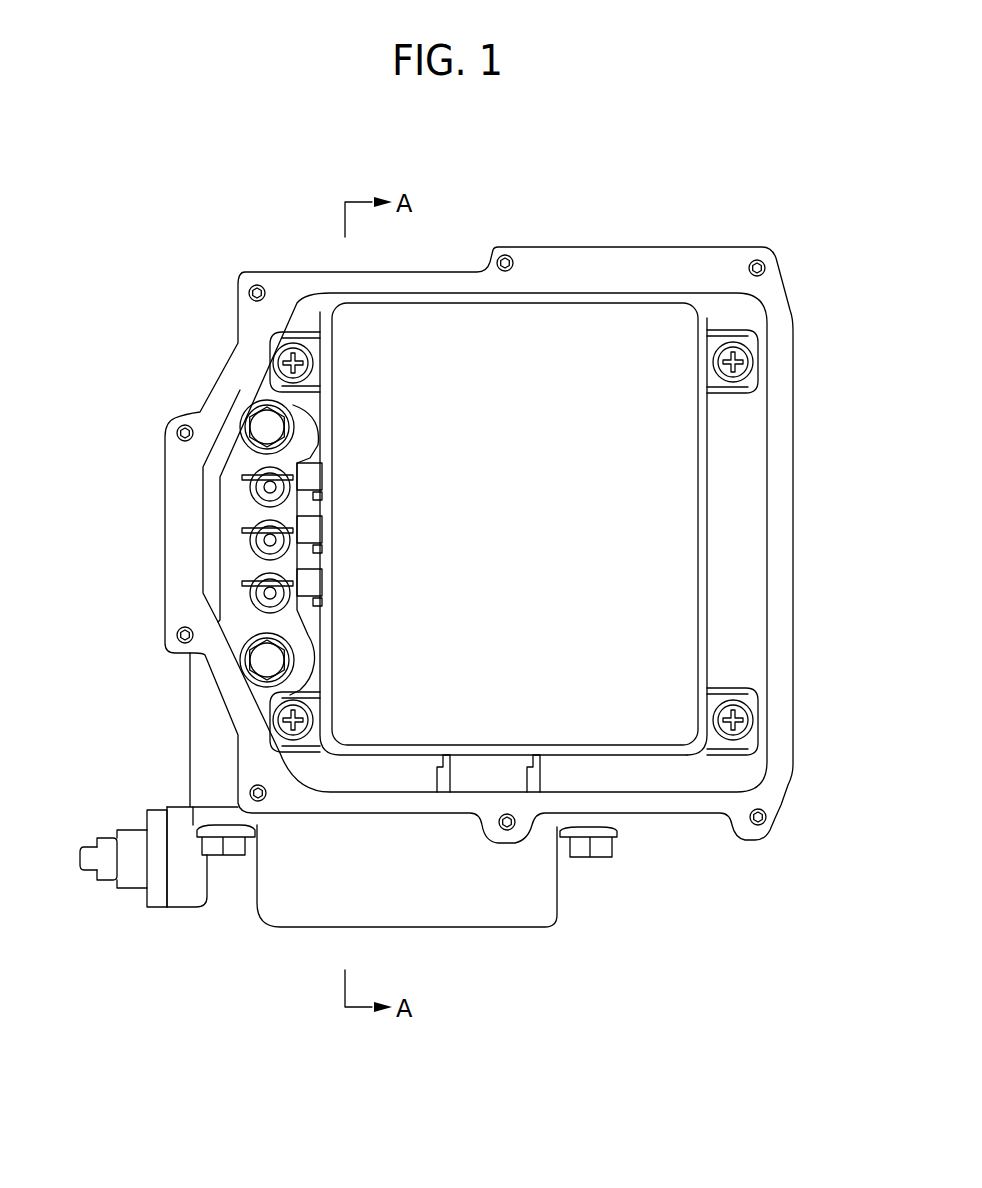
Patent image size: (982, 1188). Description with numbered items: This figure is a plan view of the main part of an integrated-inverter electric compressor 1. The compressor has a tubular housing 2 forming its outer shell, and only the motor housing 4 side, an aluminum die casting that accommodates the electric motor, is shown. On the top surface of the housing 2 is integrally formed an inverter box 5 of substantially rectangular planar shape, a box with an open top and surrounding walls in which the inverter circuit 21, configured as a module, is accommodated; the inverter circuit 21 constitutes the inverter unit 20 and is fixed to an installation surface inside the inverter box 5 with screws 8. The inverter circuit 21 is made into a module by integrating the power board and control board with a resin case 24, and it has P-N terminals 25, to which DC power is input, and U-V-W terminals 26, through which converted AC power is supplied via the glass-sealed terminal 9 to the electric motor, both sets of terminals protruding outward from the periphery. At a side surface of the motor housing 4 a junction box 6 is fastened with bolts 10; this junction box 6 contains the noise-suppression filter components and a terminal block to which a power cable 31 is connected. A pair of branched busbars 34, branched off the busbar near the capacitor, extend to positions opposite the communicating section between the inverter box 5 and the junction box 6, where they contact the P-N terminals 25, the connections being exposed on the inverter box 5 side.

The integrated-inverter electric compressor 1 is at (682, 180).
The tubular housing 2 is at (176, 732).
The motor housing 4 is at (205, 770).
The inverter box 5 is at (456, 282).
The junction box 6 is at (503, 915).
The screws 8 is at (750, 353).
The glass-sealed terminal 9 is at (230, 498).
The bolts 10 is at (599, 858).
The inverter unit 20 is at (729, 578).
The inverter circuit 21 is at (668, 502).
The resin case 24 is at (700, 446).
The P-N terminals 25 is at (547, 767).
The U-V-W terminals 26 is at (243, 583).
The power cable 31 is at (93, 862).
The branched busbars 34 is at (514, 763).